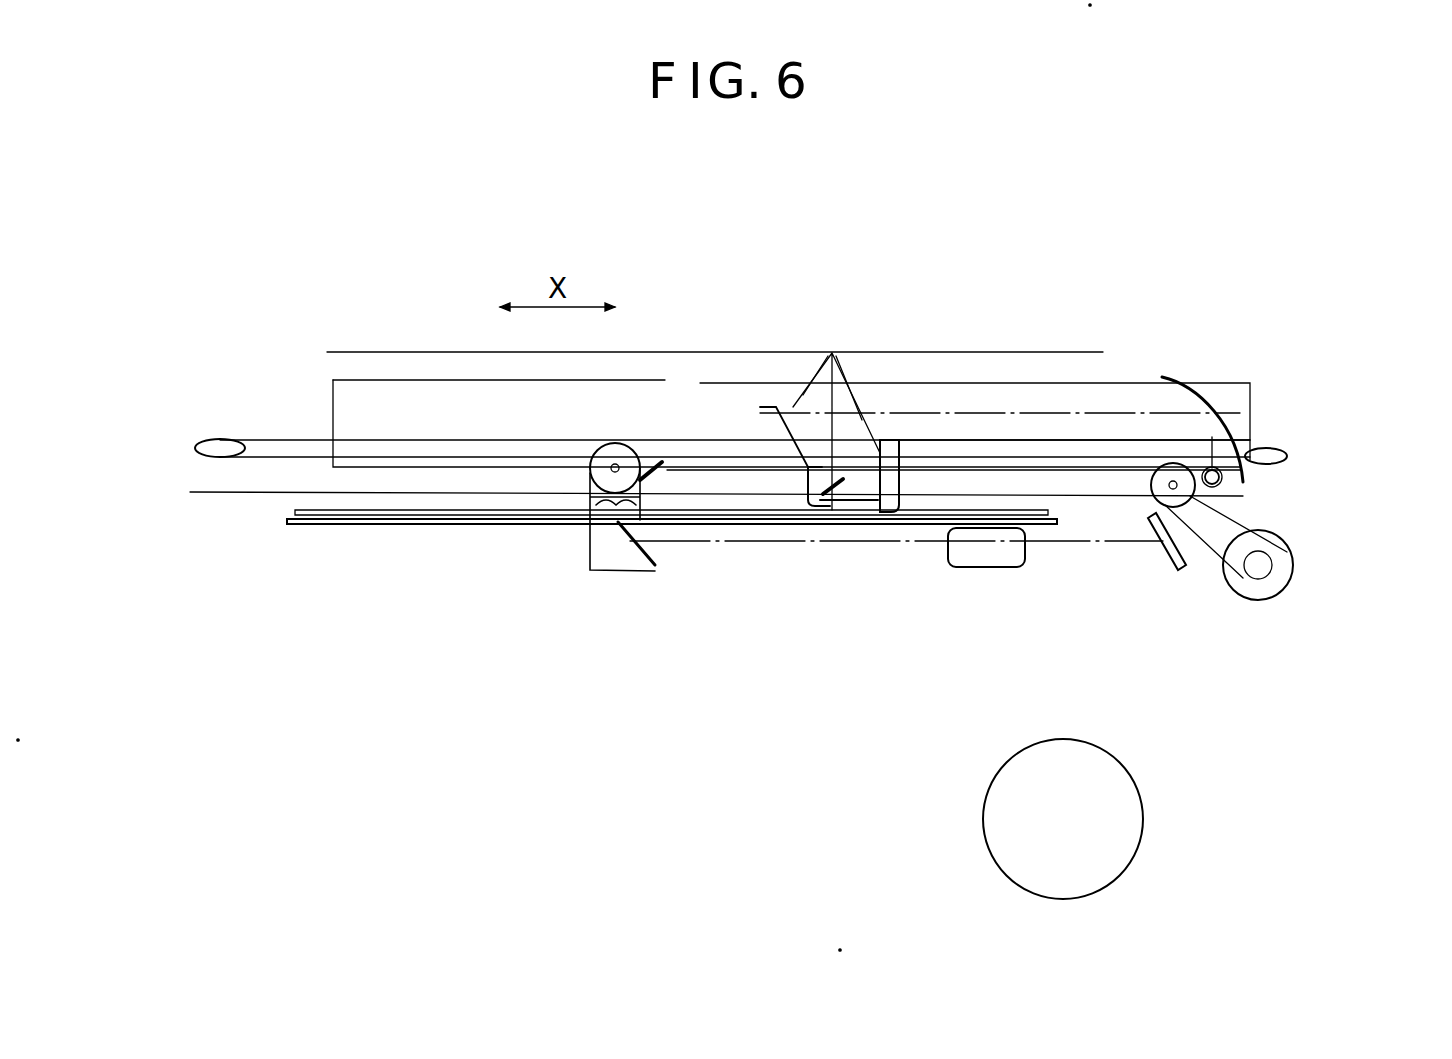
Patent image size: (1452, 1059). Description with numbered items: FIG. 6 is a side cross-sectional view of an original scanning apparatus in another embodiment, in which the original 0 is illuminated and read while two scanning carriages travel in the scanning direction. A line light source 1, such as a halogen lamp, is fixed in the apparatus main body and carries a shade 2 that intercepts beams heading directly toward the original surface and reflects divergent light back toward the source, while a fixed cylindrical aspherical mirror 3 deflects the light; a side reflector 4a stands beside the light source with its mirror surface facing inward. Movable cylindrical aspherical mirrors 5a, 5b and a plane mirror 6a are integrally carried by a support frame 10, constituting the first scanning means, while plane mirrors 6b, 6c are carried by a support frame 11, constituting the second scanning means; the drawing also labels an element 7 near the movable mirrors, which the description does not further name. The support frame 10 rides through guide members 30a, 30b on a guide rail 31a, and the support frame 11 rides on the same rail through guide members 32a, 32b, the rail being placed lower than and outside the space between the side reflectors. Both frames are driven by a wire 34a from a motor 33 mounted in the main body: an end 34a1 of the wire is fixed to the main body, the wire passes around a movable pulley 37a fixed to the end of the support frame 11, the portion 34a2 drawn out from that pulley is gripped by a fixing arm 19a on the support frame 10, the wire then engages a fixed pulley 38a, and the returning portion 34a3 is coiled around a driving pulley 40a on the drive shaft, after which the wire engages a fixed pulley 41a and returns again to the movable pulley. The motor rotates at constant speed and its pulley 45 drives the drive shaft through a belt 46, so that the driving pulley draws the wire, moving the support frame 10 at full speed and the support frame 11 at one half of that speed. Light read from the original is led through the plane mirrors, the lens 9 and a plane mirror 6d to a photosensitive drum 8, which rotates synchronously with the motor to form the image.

The original 0 is at (1072, 352).
The line light source 1 is at (1222, 474).
The shade 2 is at (1196, 488).
The fixed cylindrical aspherical mirror 3 is at (1172, 380).
The side reflector 4a is at (1250, 385).
The movable cylindrical aspherical reflecting mirror 5a is at (880, 457).
The movable cylindrical aspherical reflecting mirror 5b is at (775, 405).
The plane mirror 6a is at (850, 520).
The plane mirror 6b is at (650, 480).
The plane mirror 6c is at (638, 580).
The plane mirror 6d is at (1167, 547).
The nozzle 7 is at (838, 355).
The photosensitive drum 8 is at (1143, 825).
The lens 9 is at (1000, 570).
The support frame 10 is at (845, 520).
The support frame 11 is at (590, 580).
The fixing arm 19a is at (905, 440).
The guide member 30a is at (838, 530).
The guide member 30b is at (910, 530).
The guide rail 31a is at (300, 510).
The guide member 32a is at (565, 520).
The guide member 32b is at (645, 505).
The motor 33 is at (1285, 585).
The wire 34a is at (285, 440).
The end of wire 34a1 is at (1243, 497).
The wire portion 34a2 is at (727, 440).
The wire portion 34a3 is at (1205, 480).
The movable pulley 37a is at (625, 447).
The fixed pulley 38a is at (1278, 448).
The driving pulley 40a is at (1200, 600).
The fixed pulley 41a is at (220, 440).
The pulley 45 is at (1265, 568).
The belt 46 is at (1178, 560).